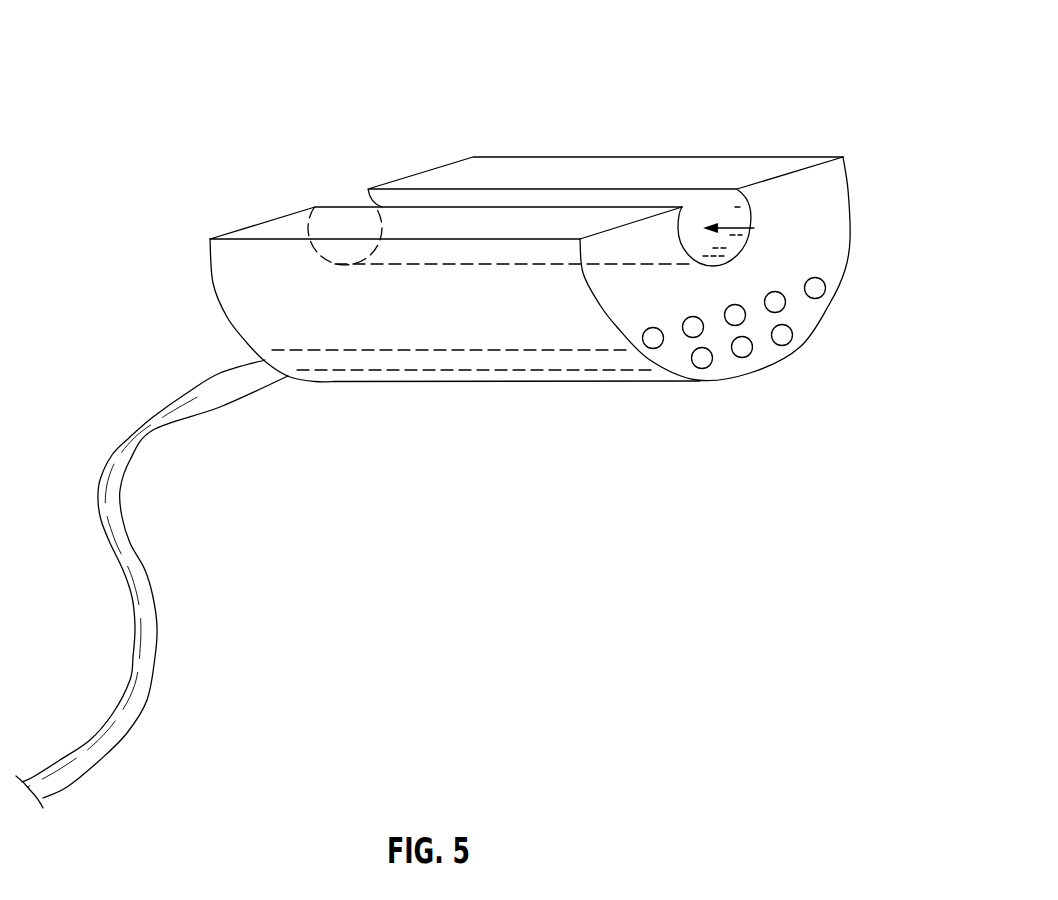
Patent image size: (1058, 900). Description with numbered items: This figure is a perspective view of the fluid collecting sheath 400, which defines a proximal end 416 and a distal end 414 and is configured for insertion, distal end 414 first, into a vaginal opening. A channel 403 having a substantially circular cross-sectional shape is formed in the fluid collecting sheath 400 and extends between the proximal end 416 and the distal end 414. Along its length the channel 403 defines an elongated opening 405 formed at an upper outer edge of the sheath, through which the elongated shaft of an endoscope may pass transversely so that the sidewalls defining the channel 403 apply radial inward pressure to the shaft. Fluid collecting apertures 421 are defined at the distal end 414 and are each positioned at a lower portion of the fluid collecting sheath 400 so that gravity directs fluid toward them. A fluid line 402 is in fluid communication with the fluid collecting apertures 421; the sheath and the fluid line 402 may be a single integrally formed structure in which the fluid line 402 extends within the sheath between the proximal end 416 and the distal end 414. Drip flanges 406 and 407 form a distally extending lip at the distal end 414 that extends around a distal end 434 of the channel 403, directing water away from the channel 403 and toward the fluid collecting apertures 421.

The fluid collecting sheath 400 is at (476, 416).
The fluid line 402 is at (373, 349).
The channel 403 is at (754, 228).
The elongated opening 405 is at (605, 149).
The drip flange 406 is at (621, 226).
The drip flange 407 is at (763, 181).
The distal end 414 is at (848, 172).
The proximal end 416 is at (210, 268).
The fluid collecting apertures 421 is at (782, 336).
The distal end of the channel 434 is at (744, 254).